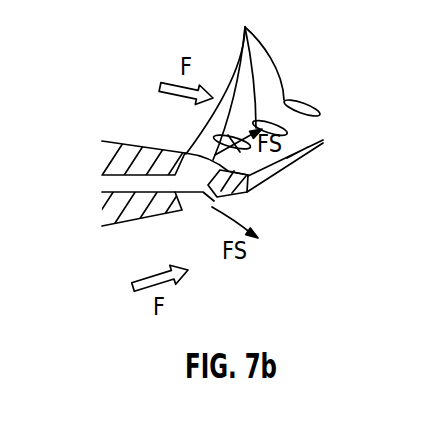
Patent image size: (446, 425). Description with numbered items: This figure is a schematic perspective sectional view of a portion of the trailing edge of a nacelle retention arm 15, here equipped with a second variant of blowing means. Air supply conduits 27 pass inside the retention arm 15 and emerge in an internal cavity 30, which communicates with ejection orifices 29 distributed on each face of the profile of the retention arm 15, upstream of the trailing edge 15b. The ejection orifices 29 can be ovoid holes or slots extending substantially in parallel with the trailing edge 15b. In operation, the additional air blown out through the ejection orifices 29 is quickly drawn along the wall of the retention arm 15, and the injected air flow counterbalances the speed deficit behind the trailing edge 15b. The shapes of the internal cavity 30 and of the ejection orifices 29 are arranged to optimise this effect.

The retention arm 15 is at (119, 143).
The trailing edge 15b is at (323, 141).
The air supply conduits 27 is at (110, 184).
The ejection orifices 29 is at (245, 27).
The internal cavity 30 is at (197, 195).